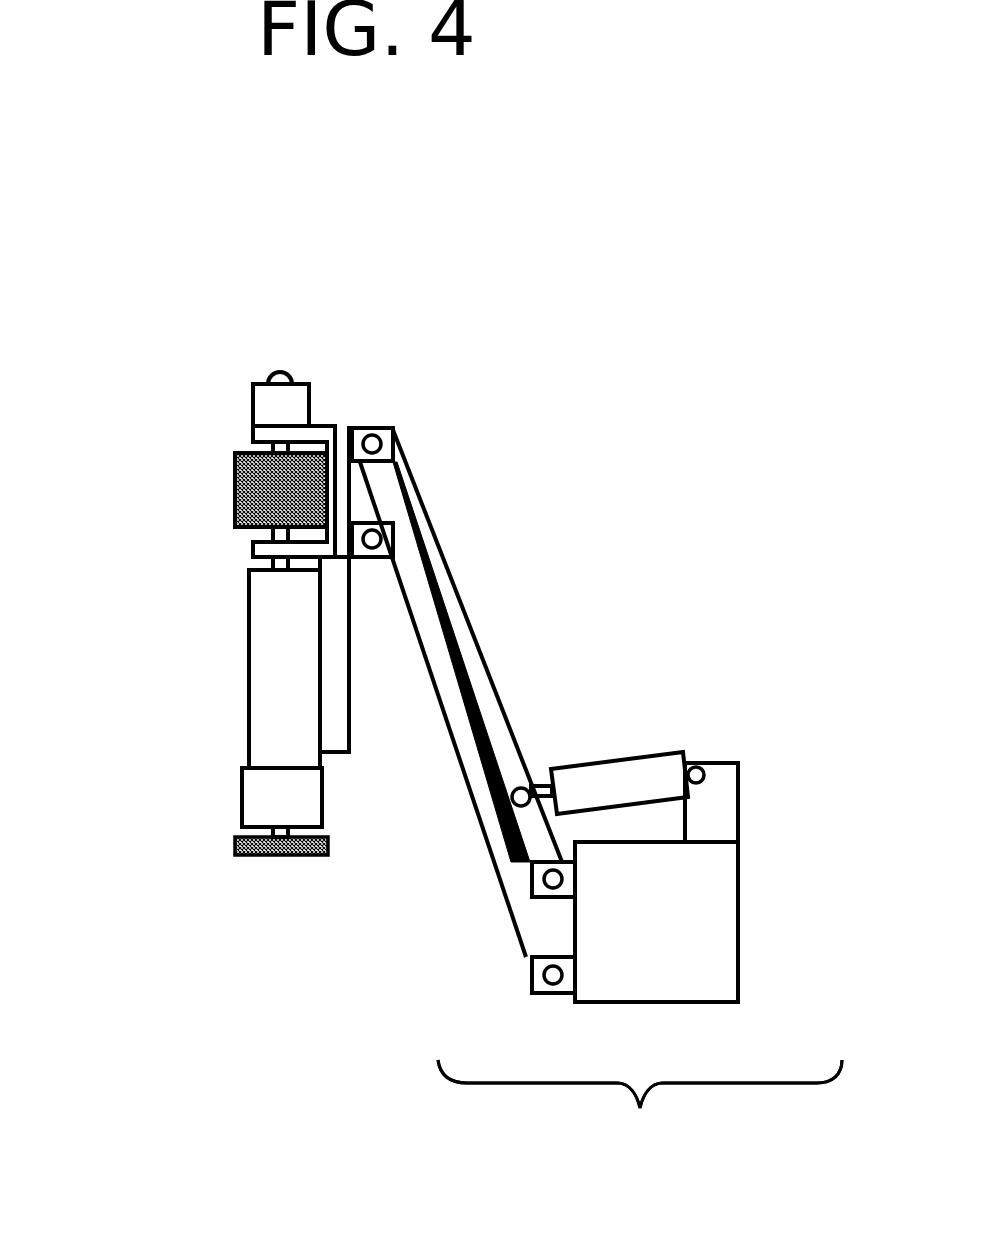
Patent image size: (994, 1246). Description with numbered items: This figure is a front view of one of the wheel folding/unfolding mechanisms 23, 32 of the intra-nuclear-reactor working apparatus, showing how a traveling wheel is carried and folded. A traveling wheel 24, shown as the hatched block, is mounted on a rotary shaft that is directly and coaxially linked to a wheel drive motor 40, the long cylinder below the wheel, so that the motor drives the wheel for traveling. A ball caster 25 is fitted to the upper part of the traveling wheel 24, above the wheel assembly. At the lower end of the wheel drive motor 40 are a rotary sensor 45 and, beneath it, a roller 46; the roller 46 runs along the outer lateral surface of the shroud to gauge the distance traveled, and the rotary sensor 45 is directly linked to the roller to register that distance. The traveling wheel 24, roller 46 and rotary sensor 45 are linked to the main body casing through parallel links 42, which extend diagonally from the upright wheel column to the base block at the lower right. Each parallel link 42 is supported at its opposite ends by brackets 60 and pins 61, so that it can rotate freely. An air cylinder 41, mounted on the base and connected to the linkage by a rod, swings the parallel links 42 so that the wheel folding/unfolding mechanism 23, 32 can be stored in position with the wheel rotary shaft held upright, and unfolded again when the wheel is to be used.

The wheel folding/unfolding mechanism 23 is at (640, 1119).
The wheel folding/unfolding mechanism 32 is at (640, 1119).
The traveling wheel 24 is at (258, 490).
The ball caster 25 is at (277, 368).
The wheel drive motor 40 is at (292, 643).
The air cylinder 41 is at (650, 775).
The parallel link 42 is at (472, 645).
The rotary sensor 45 is at (270, 793).
The roller 46 is at (301, 857).
The bracket 60 is at (395, 436).
The pin 61 is at (372, 432).